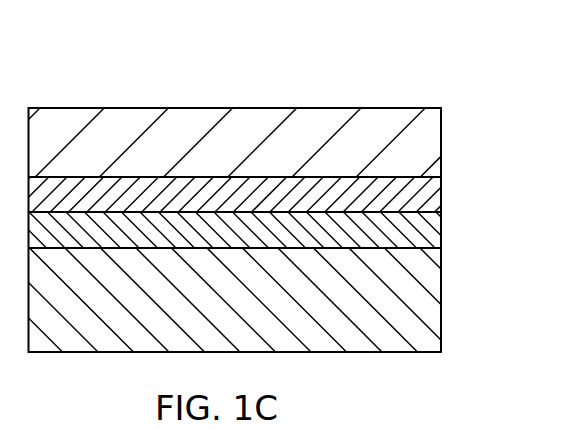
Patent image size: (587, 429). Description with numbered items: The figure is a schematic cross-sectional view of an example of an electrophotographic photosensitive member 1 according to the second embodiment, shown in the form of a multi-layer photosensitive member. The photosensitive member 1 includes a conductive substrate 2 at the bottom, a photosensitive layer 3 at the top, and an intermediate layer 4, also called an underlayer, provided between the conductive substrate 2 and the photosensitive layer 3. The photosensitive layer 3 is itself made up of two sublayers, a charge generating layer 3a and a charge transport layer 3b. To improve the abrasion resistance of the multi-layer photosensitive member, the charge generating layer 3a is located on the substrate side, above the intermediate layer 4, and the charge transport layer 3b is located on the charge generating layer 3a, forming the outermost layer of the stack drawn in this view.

The photosensitive member 1 is at (418, 87).
The conductive substrate 2 is at (423, 306).
The photosensitive layer 3 is at (291, 160).
The charge generating layer 3a is at (423, 193).
The charge transport layer 3b is at (423, 150).
The intermediate layer 4 is at (427, 235).